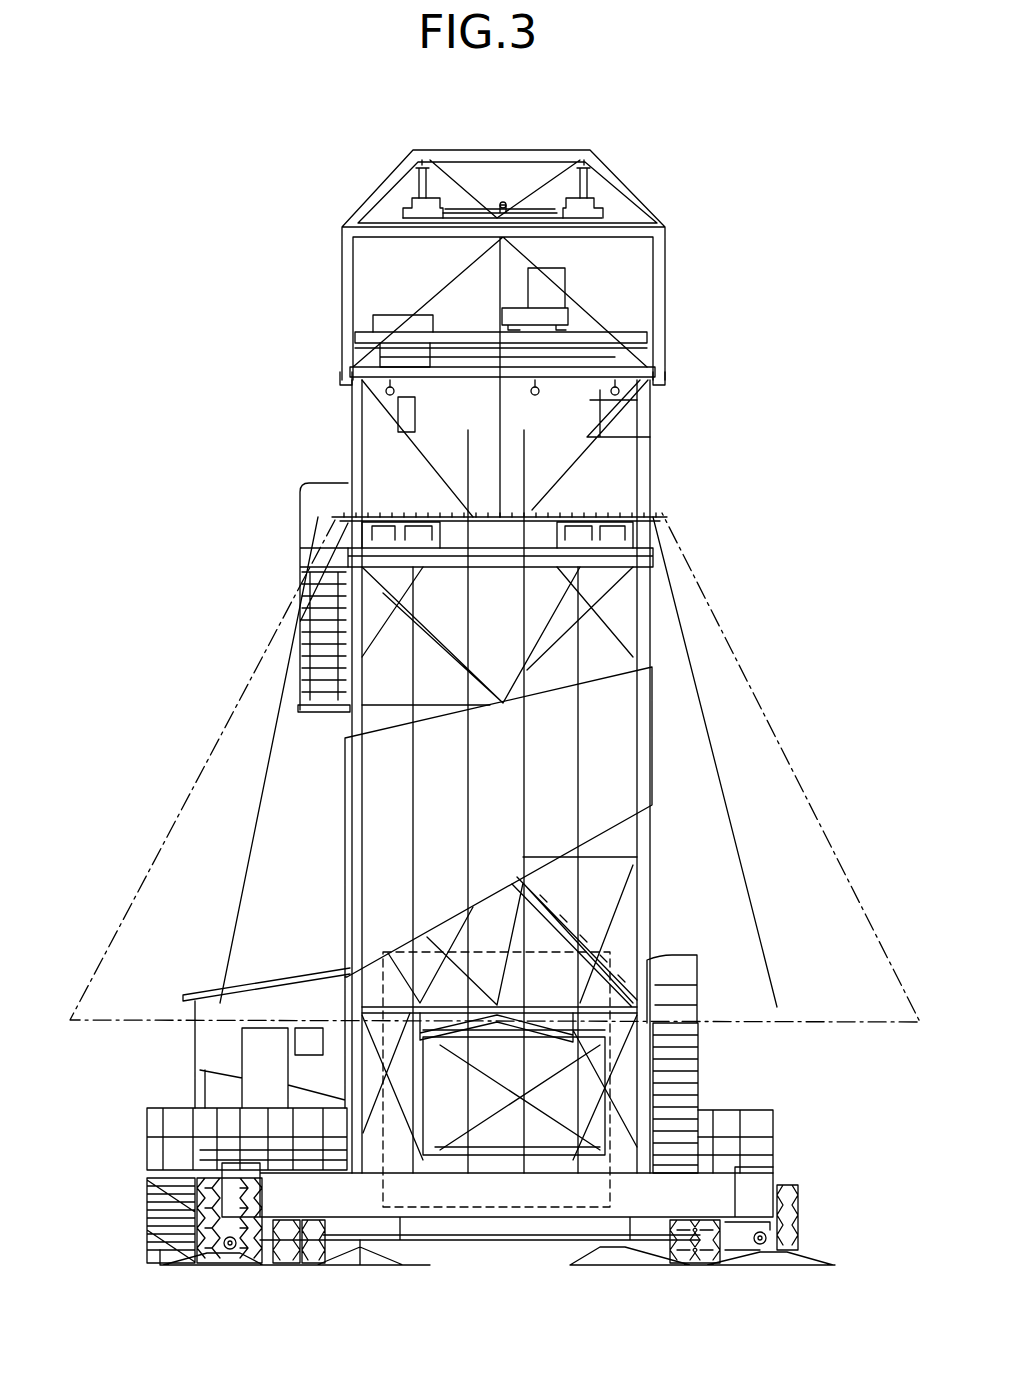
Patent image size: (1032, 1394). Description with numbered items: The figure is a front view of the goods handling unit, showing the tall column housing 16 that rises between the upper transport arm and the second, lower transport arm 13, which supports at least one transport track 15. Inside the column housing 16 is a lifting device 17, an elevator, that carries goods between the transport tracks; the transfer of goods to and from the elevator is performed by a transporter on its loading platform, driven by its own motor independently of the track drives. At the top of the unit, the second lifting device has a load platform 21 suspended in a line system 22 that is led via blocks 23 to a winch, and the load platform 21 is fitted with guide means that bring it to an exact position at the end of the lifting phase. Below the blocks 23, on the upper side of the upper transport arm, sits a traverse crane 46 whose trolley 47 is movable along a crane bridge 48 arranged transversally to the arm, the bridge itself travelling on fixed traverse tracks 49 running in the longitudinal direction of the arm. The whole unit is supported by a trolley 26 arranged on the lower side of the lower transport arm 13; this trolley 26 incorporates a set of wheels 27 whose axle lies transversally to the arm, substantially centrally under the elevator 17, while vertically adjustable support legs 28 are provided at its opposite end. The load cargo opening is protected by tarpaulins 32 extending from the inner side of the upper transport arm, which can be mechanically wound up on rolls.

The lower transport arm 13 is at (503, 1078).
The transport track 15 is at (524, 1143).
The column housing 16 is at (669, 730).
The lifting device 17 is at (625, 598).
The load platform 21 is at (457, 213).
The line system 22 is at (422, 192).
The blocks 23 is at (422, 172).
The trolley 26 is at (702, 1192).
The wheels 27 is at (152, 1195).
The support legs 28 is at (150, 1256).
The tarpaulins 32 is at (703, 702).
The traverse crane 46 is at (463, 312).
The trolley 47 is at (553, 317).
The crane bridge 48 is at (638, 338).
The traverse tracks 49 is at (648, 365).